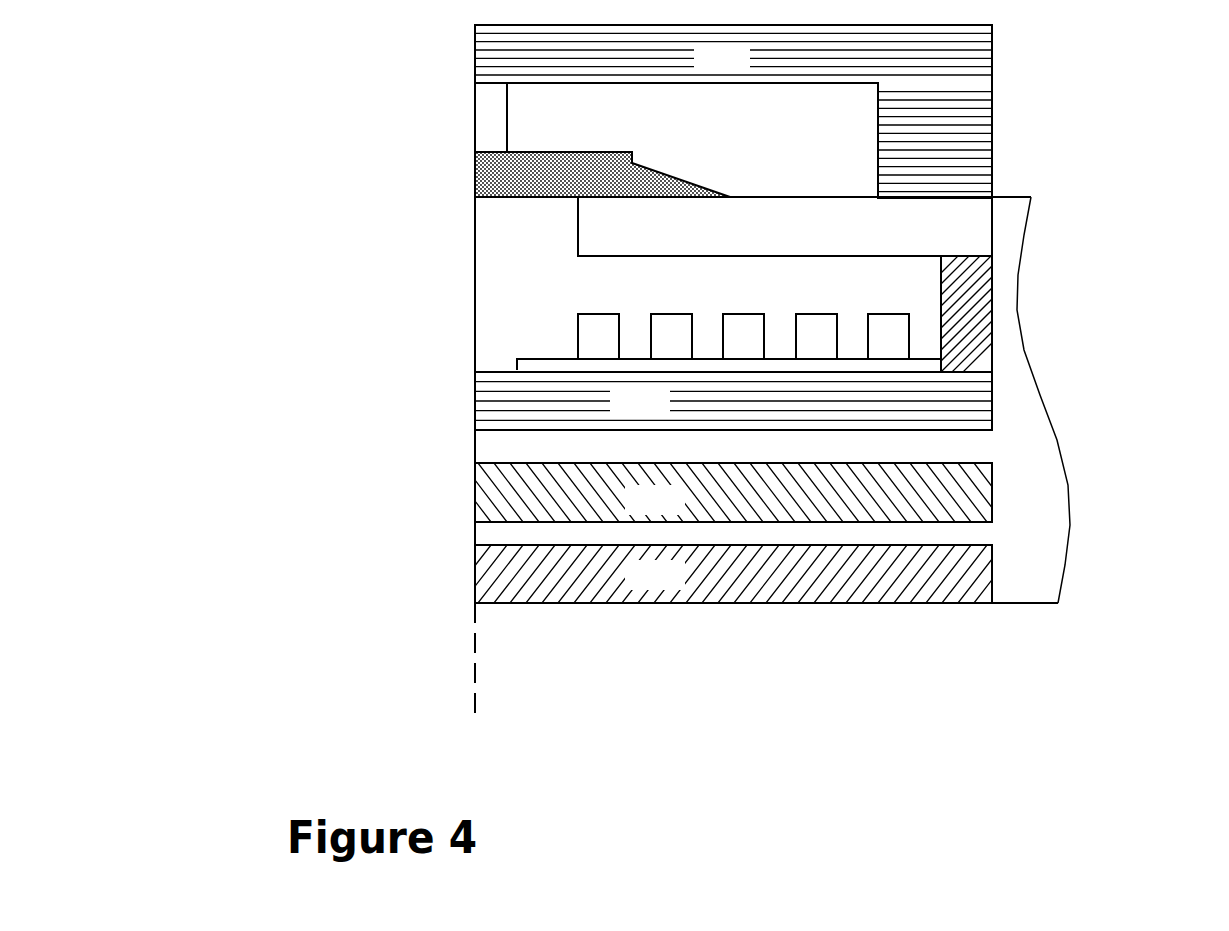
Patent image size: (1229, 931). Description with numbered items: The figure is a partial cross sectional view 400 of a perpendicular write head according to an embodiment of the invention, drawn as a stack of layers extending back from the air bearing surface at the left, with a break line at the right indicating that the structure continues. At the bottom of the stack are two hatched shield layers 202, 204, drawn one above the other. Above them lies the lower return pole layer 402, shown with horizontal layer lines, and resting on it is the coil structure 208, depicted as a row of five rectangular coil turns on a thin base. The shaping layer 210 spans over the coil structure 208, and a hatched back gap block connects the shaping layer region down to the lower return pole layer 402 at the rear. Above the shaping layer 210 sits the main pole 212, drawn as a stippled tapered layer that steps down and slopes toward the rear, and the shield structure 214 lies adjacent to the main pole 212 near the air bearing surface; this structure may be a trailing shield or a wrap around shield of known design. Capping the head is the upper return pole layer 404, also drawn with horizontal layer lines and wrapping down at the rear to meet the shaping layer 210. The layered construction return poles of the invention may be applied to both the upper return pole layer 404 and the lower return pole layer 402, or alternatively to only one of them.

The partial cross sectional view 400 is at (1040, 105).
The upper return pole layer 404 is at (747, 68).
The lower return pole layer 402 is at (665, 413).
The shield structure 214 is at (492, 118).
The main pole 212 is at (670, 180).
The shaping layer 210 is at (852, 240).
The coil structure 208 is at (577, 335).
The shield layer 204 is at (680, 512).
The shield layer 202 is at (680, 587).